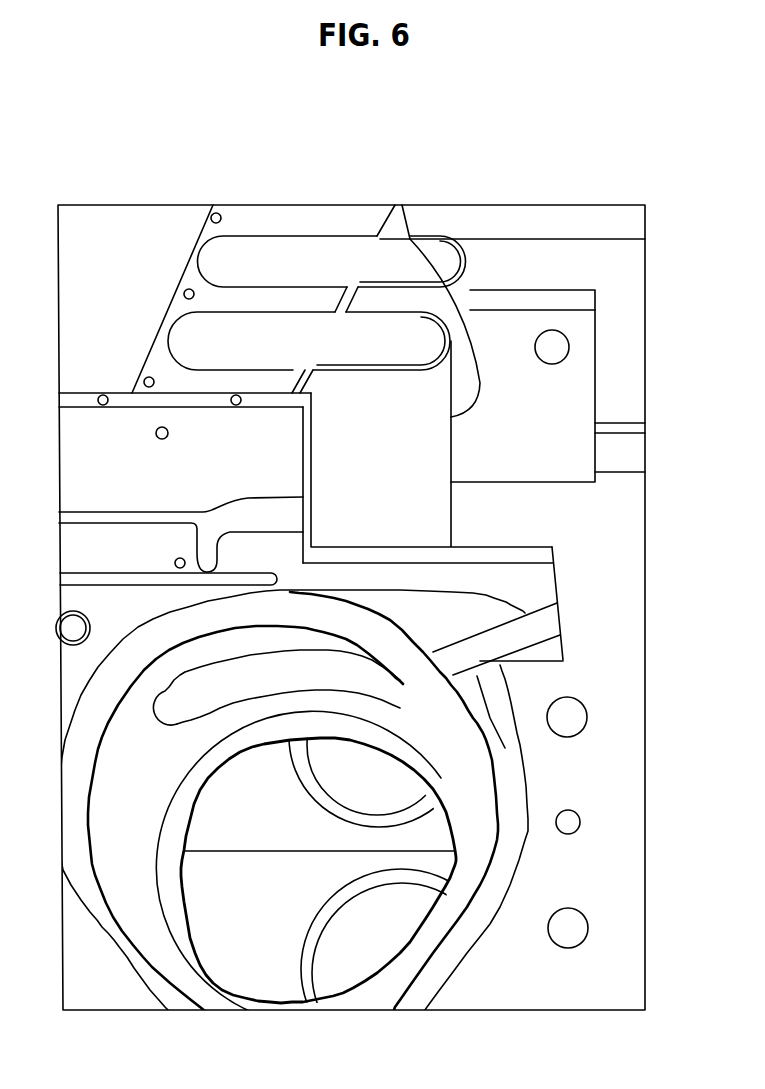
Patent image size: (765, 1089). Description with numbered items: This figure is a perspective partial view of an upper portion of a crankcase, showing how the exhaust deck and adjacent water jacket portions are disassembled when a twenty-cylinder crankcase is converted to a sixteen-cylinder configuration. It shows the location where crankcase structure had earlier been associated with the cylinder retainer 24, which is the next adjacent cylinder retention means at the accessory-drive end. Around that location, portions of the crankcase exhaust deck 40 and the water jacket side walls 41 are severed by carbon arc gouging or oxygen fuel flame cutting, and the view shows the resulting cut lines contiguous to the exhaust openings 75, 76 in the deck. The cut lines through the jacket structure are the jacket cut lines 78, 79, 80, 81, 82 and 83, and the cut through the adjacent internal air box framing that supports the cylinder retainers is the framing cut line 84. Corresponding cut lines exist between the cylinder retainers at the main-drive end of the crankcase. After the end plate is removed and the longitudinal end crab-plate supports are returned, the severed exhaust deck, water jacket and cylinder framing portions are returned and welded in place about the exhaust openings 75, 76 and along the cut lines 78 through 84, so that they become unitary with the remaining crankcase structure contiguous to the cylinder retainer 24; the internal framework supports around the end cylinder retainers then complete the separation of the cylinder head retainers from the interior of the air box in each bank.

The cylinder retainer 24 is at (262, 917).
The crankcase exhaust deck 40 is at (275, 212).
The water jacket side wall 41 is at (540, 435).
The exhaust opening 75 is at (284, 354).
The exhaust opening 76 is at (320, 271).
The jacket cut line 78 is at (427, 452).
The jacket cut line 79 is at (410, 228).
The jacket cut line 80 is at (542, 557).
The jacket cut line 81 is at (568, 300).
The jacket cut line 82 is at (557, 648).
The jacket cut line 83 is at (597, 372).
The internal air box framing cut line 84 is at (548, 617).